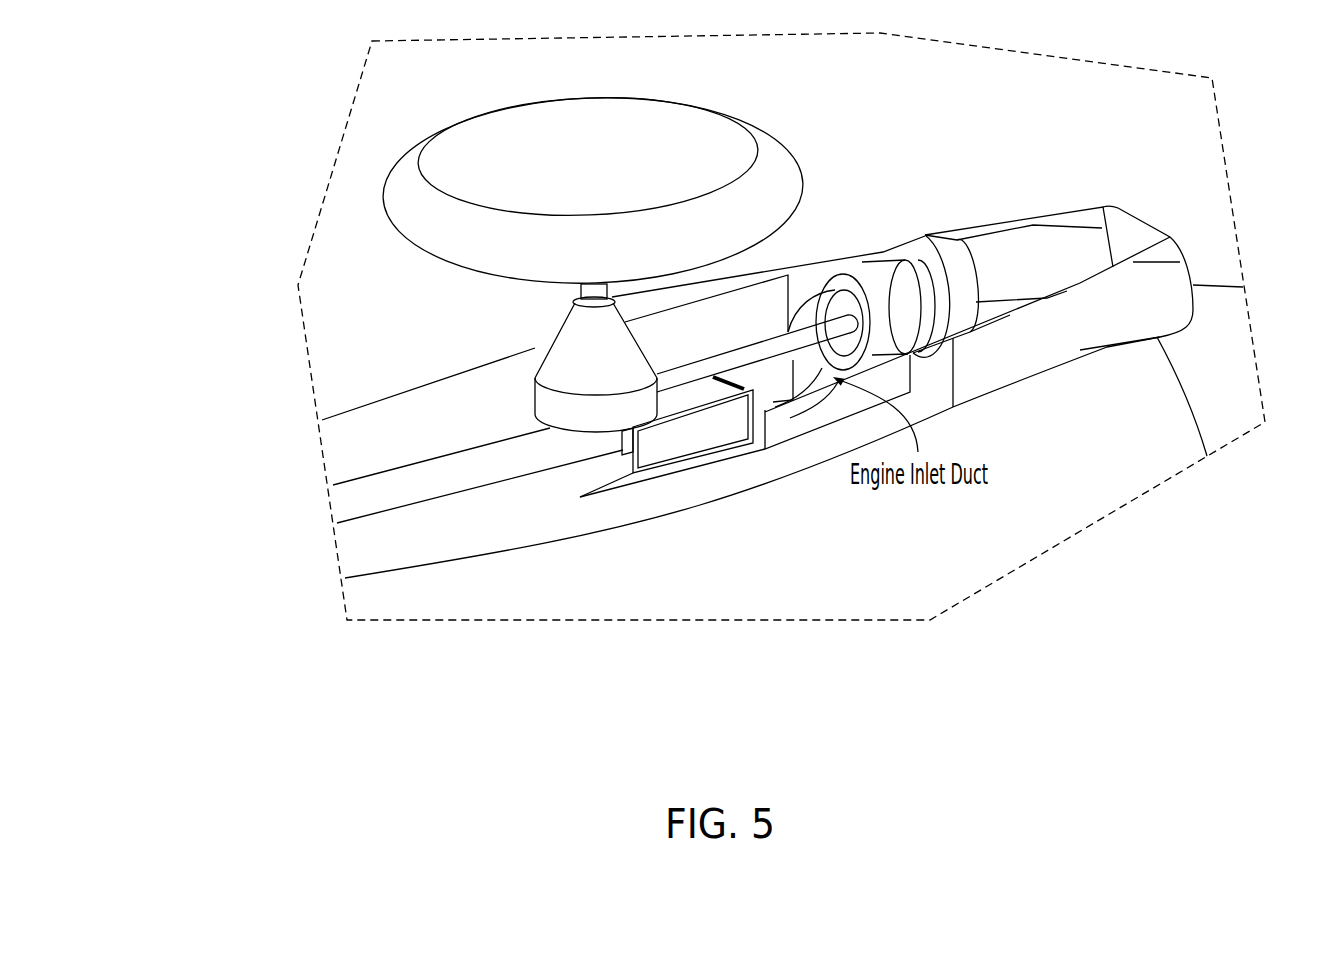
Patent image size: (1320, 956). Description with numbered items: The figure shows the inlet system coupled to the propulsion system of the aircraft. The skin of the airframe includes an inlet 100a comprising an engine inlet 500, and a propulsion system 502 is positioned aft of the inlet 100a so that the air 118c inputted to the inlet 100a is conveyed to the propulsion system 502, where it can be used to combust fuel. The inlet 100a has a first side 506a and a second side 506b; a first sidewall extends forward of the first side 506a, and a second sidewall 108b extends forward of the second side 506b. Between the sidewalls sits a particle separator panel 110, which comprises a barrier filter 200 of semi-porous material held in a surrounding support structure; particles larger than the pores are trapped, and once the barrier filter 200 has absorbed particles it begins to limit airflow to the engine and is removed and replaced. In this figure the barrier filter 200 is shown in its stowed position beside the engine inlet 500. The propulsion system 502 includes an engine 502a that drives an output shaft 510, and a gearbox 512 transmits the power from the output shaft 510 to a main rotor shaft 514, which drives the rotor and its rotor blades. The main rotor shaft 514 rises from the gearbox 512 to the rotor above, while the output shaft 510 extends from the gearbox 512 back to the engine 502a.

The output shaft 510 is at (710, 346).
The propulsion system 502 is at (1052, 281).
The engine 502a is at (956, 226).
The first side of the inlet 506a is at (753, 332).
The air flowing through the inlet 118c is at (806, 296).
The main rotor shaft 514 is at (568, 295).
The gearbox 512 is at (524, 396).
The second sidewall 108b is at (693, 465).
The second side of the inlet 506b is at (758, 440).
The particle separator panel 110 is at (652, 562).
The barrier filter 200 is at (652, 562).
The inlet 100a is at (831, 551).
The engine inlet 500 is at (756, 472).